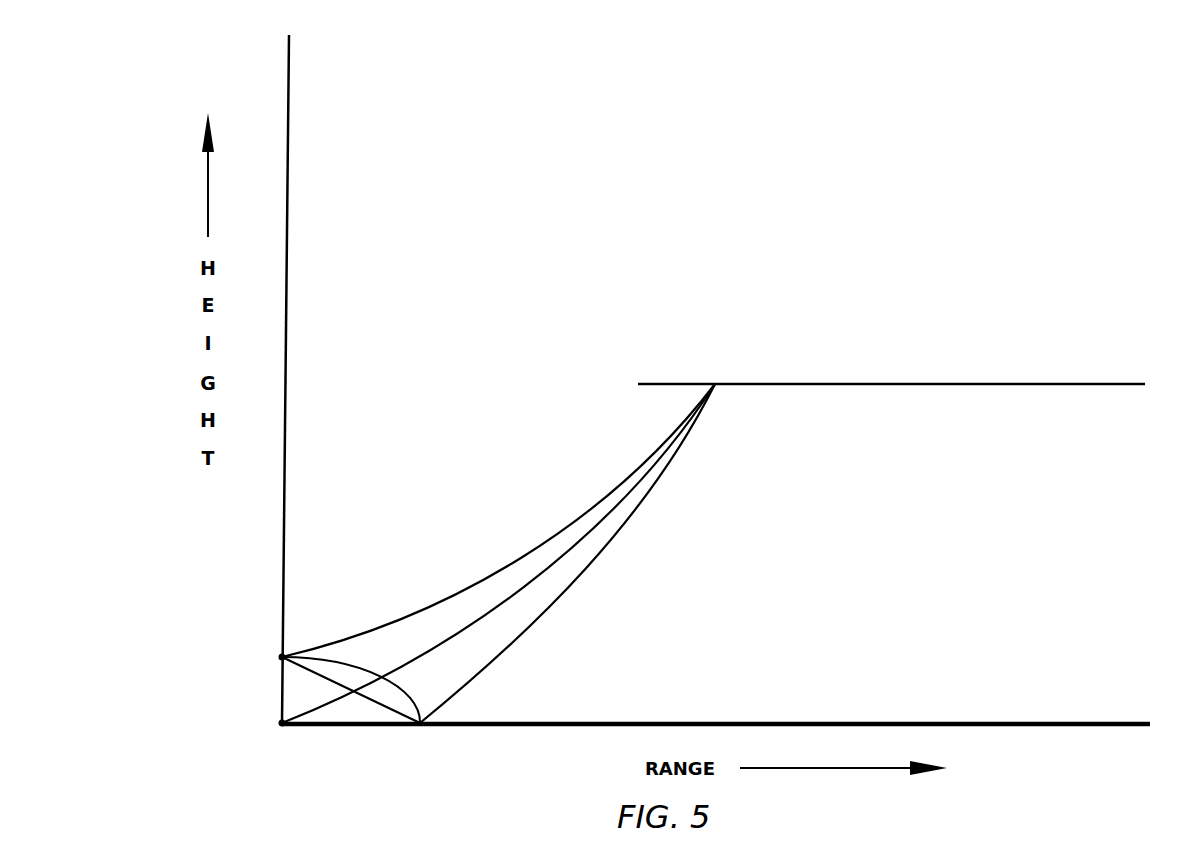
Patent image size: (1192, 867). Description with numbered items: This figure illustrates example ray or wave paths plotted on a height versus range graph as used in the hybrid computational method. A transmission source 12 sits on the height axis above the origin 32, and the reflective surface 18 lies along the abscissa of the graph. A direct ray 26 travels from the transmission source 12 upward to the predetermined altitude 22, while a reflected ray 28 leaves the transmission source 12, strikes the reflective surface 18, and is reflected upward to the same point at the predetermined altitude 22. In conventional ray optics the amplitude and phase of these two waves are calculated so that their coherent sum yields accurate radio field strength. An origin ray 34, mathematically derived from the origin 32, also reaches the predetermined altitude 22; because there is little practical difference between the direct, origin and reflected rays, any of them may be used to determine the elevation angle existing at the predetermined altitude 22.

The transmission source 12 is at (262, 647).
The reflective surface 18 is at (763, 723).
The predetermined altitude 22 is at (1118, 385).
The direct ray 26 is at (547, 543).
The reflected ray 28 is at (517, 641).
The origin 32 is at (255, 747).
The origin ray 34 is at (376, 679).